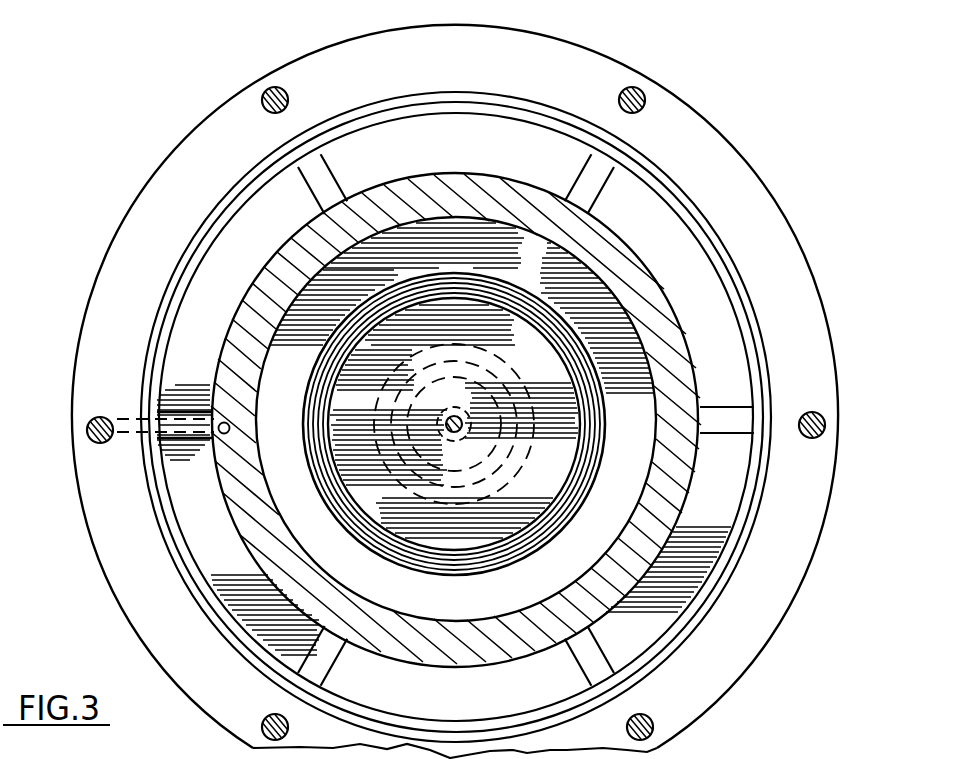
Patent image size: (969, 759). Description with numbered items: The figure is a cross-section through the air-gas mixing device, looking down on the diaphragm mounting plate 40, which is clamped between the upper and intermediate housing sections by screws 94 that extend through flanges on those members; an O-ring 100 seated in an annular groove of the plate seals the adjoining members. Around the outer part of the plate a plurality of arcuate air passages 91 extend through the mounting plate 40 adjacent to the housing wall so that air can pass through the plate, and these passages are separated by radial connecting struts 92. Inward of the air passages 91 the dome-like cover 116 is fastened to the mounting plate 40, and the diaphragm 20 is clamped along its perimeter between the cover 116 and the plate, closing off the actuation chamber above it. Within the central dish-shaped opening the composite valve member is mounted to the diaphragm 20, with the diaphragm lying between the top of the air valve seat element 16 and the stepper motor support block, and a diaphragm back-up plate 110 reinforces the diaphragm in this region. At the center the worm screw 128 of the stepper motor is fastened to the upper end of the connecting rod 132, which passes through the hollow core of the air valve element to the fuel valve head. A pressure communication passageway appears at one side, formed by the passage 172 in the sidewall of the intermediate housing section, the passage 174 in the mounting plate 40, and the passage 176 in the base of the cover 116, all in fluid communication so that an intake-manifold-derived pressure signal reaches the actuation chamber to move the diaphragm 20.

The air valve seat element 16 is at (505, 462).
The diaphragm 20 is at (497, 603).
The diaphragm mounting plate 40 is at (803, 303).
The arcuate air passages 91 is at (410, 138).
The radial connecting struts 92 is at (735, 415).
The screws 94 is at (265, 110).
The O-ring 100 is at (748, 538).
The diaphragm back-up plate 110 is at (565, 435).
The dome-like cover 116 is at (650, 298).
The worm screw 128 is at (454, 414).
The connecting rod 132 is at (456, 440).
The passage 172 is at (101, 418).
The passage 174 is at (178, 395).
The passage 176 is at (218, 437).